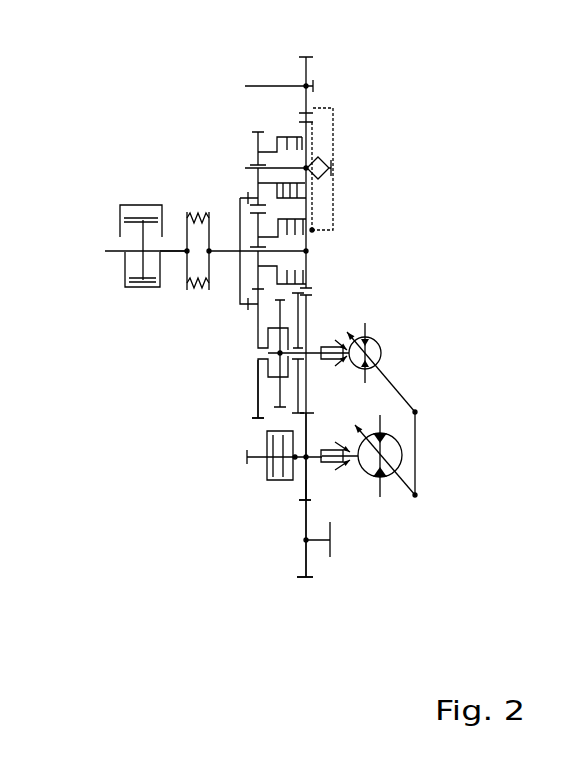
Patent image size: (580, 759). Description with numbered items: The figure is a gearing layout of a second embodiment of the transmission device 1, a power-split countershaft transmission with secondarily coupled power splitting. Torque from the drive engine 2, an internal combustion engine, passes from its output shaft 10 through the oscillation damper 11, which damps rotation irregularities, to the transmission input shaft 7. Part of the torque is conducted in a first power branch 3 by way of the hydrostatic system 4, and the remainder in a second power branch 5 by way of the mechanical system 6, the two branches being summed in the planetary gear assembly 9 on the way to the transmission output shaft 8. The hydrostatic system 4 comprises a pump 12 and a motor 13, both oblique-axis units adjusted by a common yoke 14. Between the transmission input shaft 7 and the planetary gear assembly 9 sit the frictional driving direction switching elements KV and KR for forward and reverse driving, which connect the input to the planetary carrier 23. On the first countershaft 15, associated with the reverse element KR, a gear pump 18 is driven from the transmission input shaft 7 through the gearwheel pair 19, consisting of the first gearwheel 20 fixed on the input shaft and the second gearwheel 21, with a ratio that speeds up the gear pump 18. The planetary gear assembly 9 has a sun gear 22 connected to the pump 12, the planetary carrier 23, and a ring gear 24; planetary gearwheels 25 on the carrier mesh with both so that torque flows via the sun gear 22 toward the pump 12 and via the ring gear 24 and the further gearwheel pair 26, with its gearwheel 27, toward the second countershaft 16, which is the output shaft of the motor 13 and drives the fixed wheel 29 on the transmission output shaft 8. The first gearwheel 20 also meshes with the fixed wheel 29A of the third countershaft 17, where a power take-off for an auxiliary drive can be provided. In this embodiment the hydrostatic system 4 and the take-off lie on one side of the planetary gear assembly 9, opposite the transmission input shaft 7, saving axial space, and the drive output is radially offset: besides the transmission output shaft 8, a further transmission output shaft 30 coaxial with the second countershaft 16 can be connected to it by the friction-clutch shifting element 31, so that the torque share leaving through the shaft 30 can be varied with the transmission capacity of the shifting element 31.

The transmission device 1 is at (352, 272).
The drive engine 2 is at (117, 205).
The first power branch 3 is at (435, 417).
The hydrostatic system 4 is at (400, 502).
The second power branch 5 is at (210, 348).
The mechanical system 6 is at (240, 350).
The transmission input shaft 7 is at (187, 212).
The transmission output shaft 8 is at (313, 547).
The planetary gear assembly 9 is at (257, 432).
The output shaft of the drive engine 10 is at (180, 250).
The oscillation damper 11 is at (199, 212).
The pump 12 is at (378, 342).
The motor 13 is at (403, 455).
The common yoke 14 is at (416, 440).
The first countershaft 15 is at (255, 195).
The second countershaft 16 is at (300, 490).
The third countershaft 17 is at (253, 87).
The gear pump 18 is at (331, 167).
The gearwheel pair 19 is at (313, 207).
The first gearwheel 20 is at (310, 268).
The second gearwheel 21 is at (312, 128).
The sun gear 22 is at (258, 366).
The planetary carrier 23 is at (257, 394).
The ring gear 24 is at (308, 307).
The planetary gearwheels 25 is at (310, 318).
The further gearwheel pair 26 is at (318, 408).
The gearwheel 27 is at (310, 490).
The fixed wheel 29 is at (297, 560).
The fixed wheel 29A is at (312, 76).
The further transmission output shaft 30 is at (250, 458).
The shifting element 31 is at (290, 480).
The driving direction switching element KV is at (225, 250).
The driving direction switching element KR is at (288, 136).